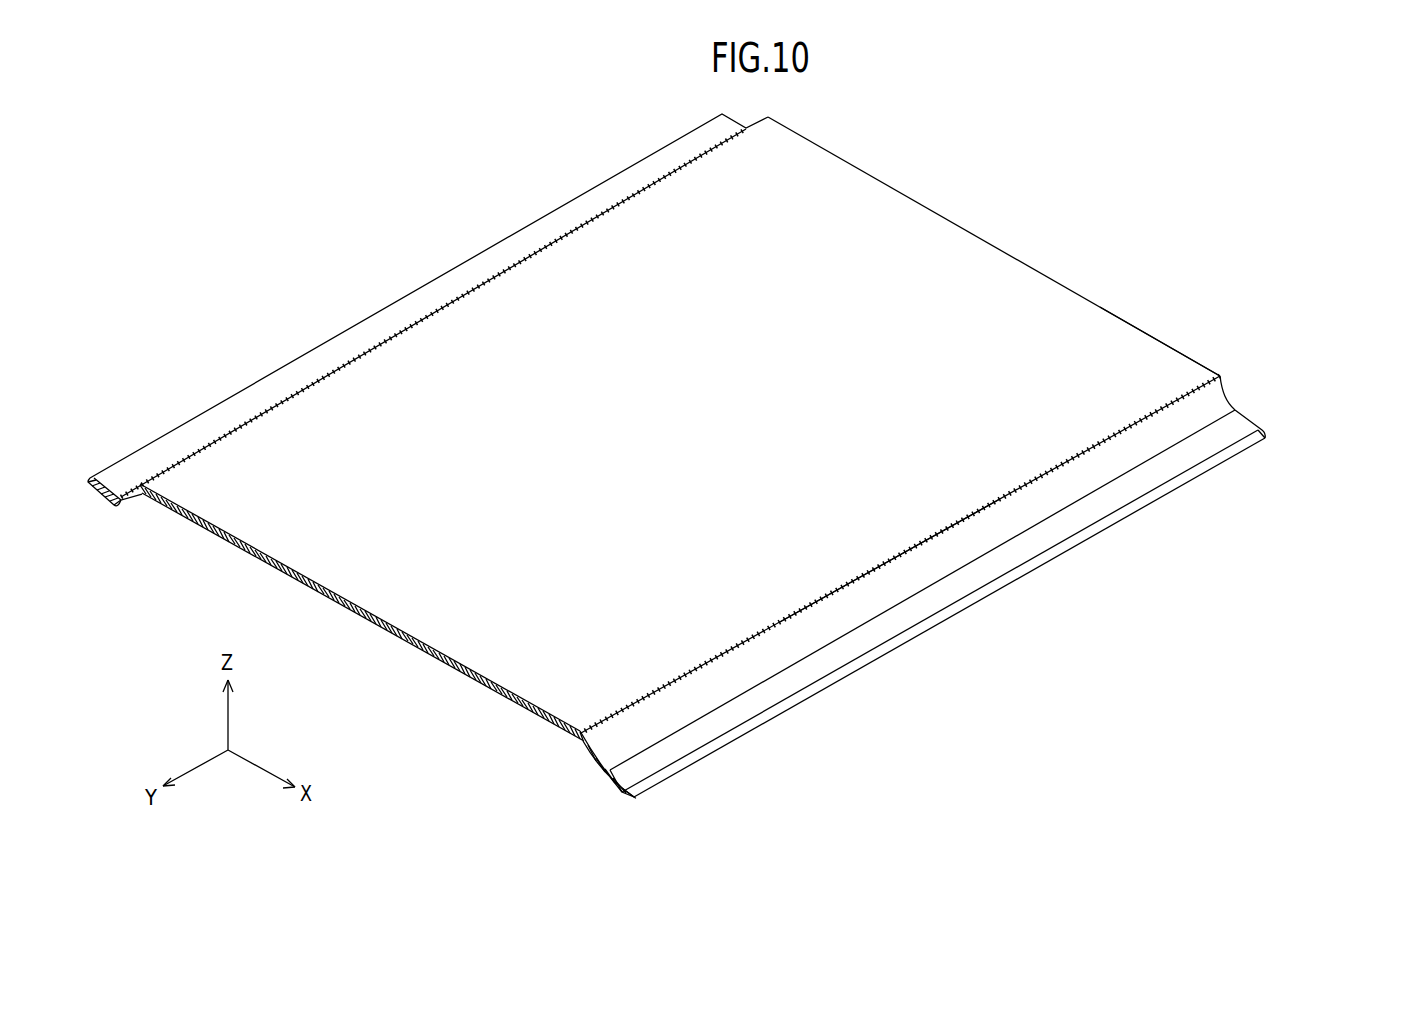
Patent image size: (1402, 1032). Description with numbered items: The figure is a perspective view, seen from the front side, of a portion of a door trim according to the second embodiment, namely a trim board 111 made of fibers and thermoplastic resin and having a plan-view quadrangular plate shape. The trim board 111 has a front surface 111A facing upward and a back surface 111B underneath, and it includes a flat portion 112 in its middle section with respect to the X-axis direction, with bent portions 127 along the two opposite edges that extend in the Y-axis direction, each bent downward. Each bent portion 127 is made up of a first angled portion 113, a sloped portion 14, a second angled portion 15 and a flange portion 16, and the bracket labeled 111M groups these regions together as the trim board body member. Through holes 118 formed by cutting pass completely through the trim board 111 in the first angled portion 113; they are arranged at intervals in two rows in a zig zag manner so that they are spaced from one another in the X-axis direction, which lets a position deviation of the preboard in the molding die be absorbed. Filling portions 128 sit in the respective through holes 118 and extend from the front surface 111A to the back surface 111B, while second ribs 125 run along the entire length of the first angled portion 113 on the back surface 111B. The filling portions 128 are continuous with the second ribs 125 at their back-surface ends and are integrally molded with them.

The trim board 111 is at (882, 172).
The front surface 111A is at (913, 268).
The back surface 111B is at (415, 660).
The flat portion 112 is at (1168, 368).
The first angled portion 113 is at (1217, 377).
The sloped portion 14 is at (1193, 420).
The second angled portion 15 is at (1150, 457).
The flange portion 16 is at (1100, 507).
The mounting portion 111M is at (1315, 290).
The through holes 118 is at (953, 530).
The second ribs 125 is at (580, 747).
The bent portions 127 is at (597, 800).
The filling portions 128 is at (778, 623).